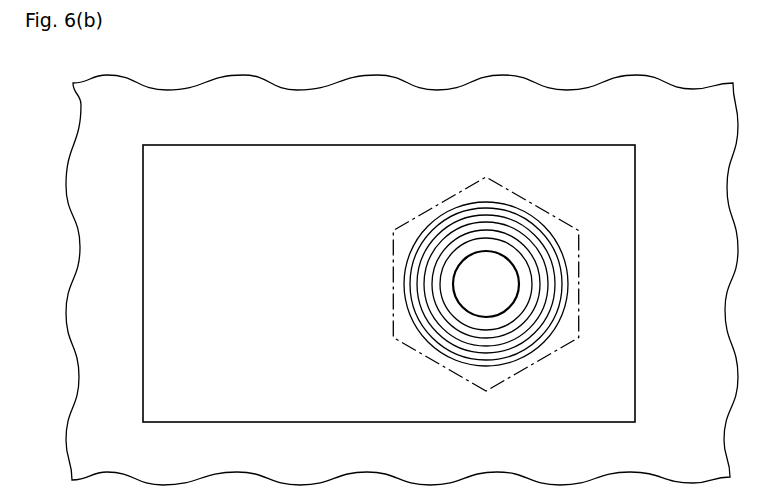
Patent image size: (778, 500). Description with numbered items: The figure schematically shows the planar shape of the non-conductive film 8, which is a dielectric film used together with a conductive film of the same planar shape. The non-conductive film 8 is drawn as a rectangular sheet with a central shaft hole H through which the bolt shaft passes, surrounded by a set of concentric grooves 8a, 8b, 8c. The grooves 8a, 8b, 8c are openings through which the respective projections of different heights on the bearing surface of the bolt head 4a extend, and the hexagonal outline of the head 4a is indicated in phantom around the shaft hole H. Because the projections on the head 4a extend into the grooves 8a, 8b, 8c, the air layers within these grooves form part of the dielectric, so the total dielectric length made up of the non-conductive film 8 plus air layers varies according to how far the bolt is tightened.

The non-conductive film 8 is at (362, 146).
The groove 8a is at (535, 280).
The groove 8b is at (528, 232).
The groove 8c is at (488, 203).
The head 4a is at (453, 373).
The shaft hole H is at (500, 292).